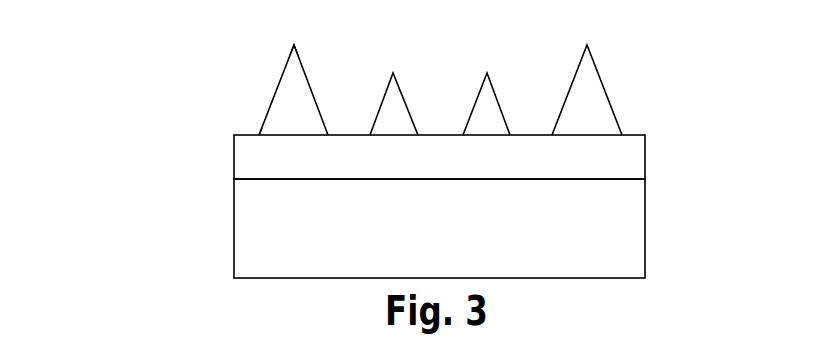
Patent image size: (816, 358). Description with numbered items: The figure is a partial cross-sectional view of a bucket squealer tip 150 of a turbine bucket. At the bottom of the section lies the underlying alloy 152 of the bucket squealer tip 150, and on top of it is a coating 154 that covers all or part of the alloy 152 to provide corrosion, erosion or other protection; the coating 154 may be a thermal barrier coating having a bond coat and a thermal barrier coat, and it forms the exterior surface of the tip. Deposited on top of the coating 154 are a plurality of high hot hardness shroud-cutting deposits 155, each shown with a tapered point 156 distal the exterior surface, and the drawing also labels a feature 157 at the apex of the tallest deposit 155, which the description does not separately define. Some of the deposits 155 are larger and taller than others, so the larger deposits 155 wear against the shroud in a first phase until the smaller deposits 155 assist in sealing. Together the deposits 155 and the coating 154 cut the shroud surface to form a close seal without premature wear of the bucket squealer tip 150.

The bucket squealer tip 150 is at (402, 146).
The alloy 152 is at (645, 232).
The coating 154 is at (645, 150).
The high hot hardness shroud-cutting deposits 155 is at (600, 70).
The tapered point 156 is at (259, 133).
The protrusion tip 157 is at (294, 45).